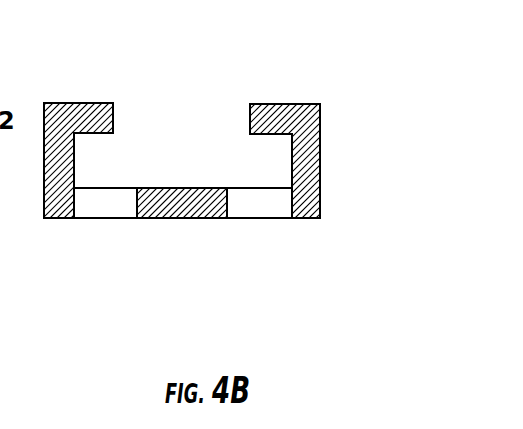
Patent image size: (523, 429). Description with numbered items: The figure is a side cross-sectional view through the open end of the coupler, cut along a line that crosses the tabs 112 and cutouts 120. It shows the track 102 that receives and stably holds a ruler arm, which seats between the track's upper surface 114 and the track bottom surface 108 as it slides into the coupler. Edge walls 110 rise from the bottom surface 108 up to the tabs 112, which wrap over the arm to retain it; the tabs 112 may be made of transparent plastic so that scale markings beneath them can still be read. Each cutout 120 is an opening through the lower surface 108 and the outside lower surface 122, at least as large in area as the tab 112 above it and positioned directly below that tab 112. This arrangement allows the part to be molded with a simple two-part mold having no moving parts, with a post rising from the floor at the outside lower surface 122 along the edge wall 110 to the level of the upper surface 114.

The track 102 is at (348, 152).
The track bottom surface 108 is at (155, 188).
The edge walls 110 is at (76, 162).
The tabs 112 is at (88, 102).
The upper surface 114 is at (267, 140).
The cutouts 120 is at (103, 210).
The outside lower surface 122 is at (163, 218).